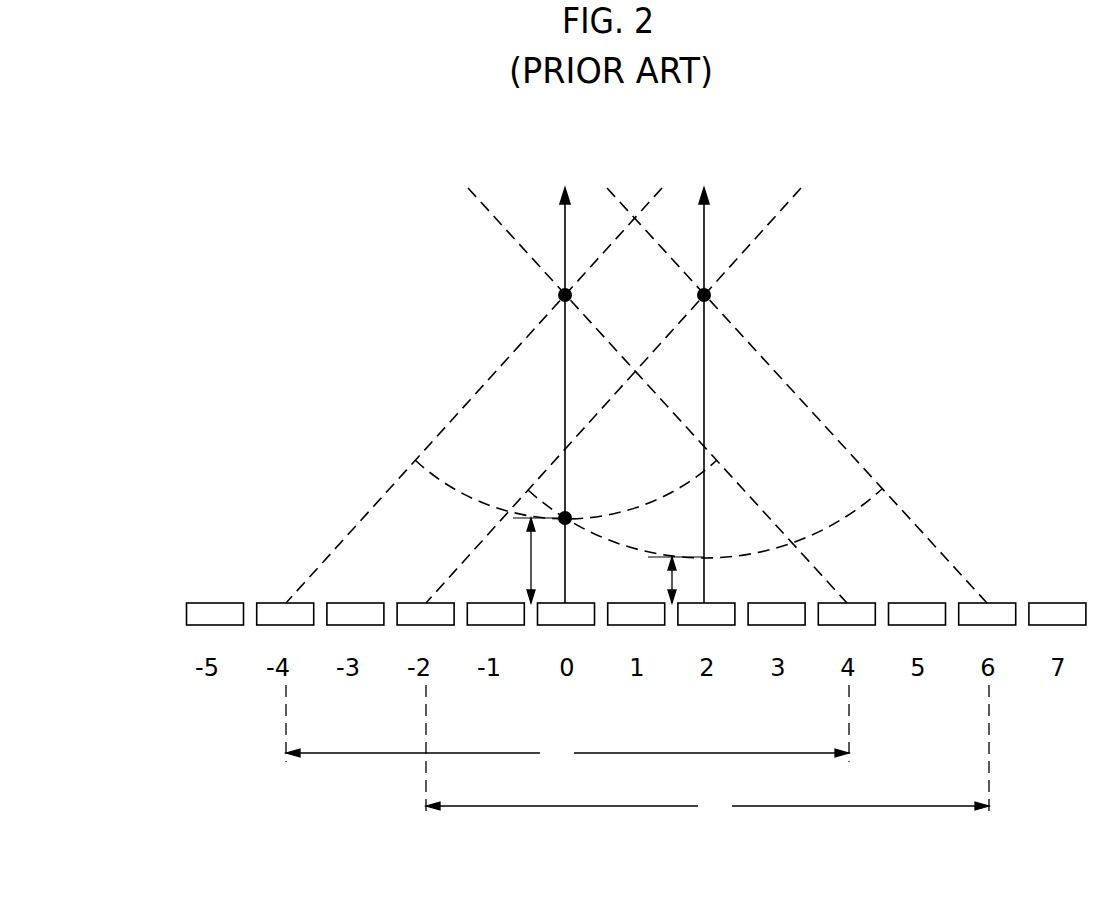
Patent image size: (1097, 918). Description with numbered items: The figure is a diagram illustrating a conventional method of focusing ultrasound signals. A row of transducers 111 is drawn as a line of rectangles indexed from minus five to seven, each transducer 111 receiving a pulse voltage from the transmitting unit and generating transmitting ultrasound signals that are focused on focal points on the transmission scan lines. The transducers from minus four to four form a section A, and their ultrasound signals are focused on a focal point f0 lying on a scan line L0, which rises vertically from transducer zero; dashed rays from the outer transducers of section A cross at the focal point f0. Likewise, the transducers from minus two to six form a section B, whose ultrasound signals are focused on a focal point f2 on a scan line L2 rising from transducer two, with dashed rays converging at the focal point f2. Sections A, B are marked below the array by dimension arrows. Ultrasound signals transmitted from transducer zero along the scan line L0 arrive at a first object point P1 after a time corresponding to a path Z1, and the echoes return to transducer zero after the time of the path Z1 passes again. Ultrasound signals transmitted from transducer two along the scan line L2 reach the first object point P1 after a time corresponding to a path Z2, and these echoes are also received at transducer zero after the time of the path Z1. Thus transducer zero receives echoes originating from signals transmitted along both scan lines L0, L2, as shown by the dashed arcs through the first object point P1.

The transducer 111 is at (186, 612).
The scan line L0 is at (565, 380).
The scan line L2 is at (704, 380).
The focal point f0 is at (566, 395).
The focal point f2 is at (706, 395).
The first object point P1 is at (581, 503).
The path Z1 is at (528, 560).
The path Z2 is at (665, 580).
The section A is at (567, 726).
The section B is at (707, 753).